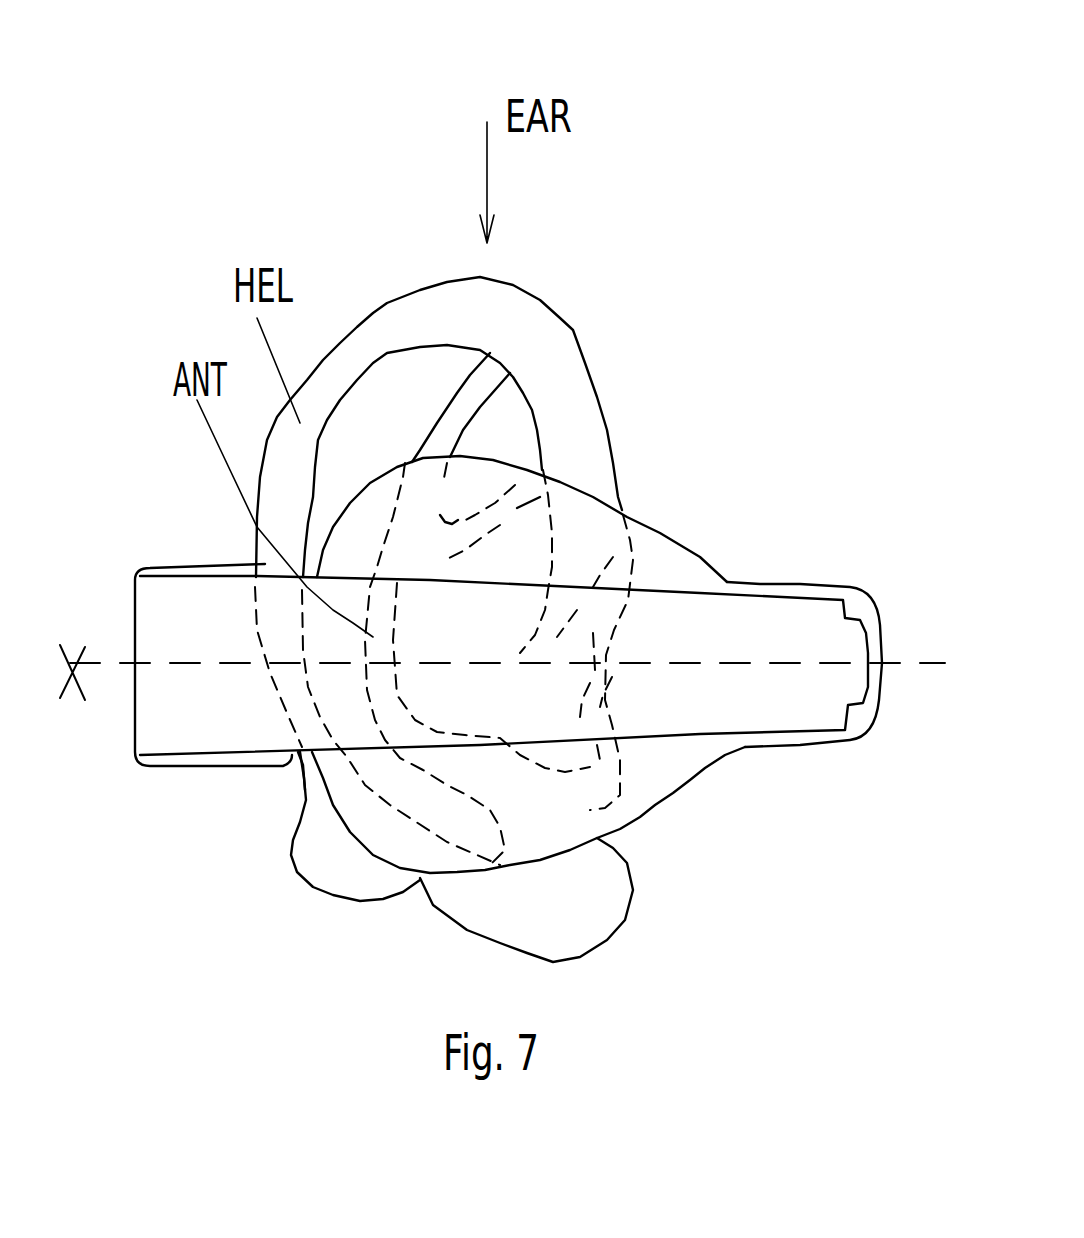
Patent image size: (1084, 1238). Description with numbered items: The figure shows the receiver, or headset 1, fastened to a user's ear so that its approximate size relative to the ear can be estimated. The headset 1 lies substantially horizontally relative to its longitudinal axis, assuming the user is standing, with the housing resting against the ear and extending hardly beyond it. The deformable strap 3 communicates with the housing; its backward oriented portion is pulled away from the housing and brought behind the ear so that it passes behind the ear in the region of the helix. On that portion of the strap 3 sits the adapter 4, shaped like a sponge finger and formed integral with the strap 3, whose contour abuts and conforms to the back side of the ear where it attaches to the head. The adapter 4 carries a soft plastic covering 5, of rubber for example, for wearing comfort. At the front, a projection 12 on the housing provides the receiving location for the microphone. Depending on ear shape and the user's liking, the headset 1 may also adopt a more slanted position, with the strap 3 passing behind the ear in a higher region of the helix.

The receiver 1 is at (644, 837).
The strap 3 is at (169, 552).
The adapter 4 is at (296, 777).
The soft plastic covering 5 is at (363, 888).
The projection 12 is at (789, 565).